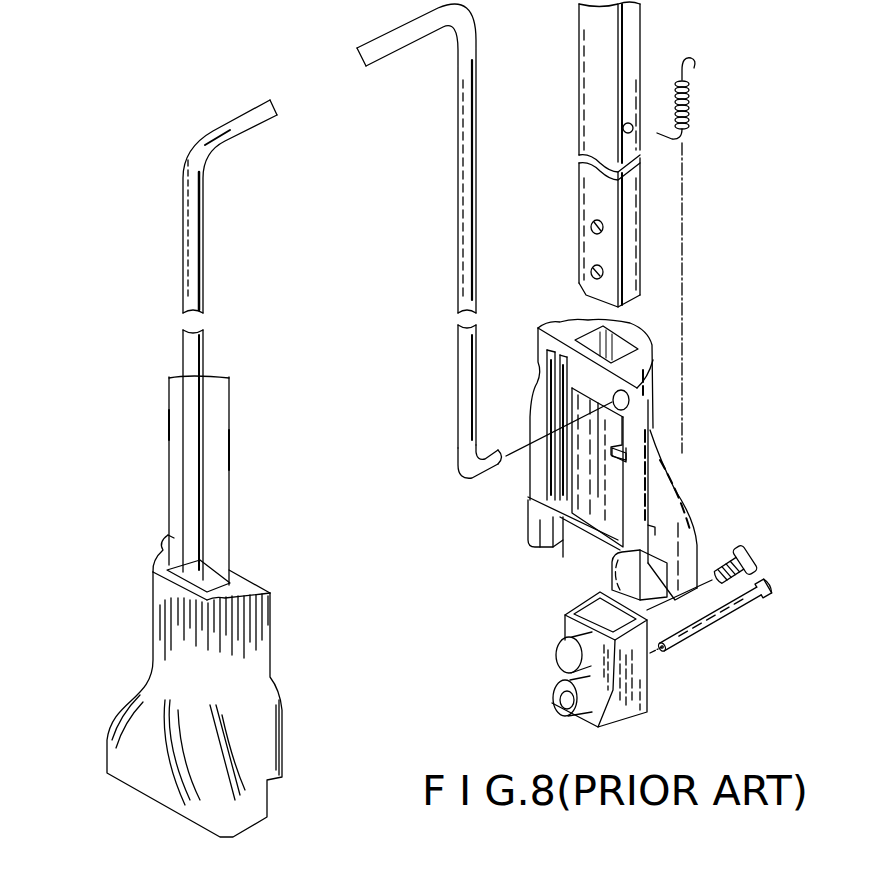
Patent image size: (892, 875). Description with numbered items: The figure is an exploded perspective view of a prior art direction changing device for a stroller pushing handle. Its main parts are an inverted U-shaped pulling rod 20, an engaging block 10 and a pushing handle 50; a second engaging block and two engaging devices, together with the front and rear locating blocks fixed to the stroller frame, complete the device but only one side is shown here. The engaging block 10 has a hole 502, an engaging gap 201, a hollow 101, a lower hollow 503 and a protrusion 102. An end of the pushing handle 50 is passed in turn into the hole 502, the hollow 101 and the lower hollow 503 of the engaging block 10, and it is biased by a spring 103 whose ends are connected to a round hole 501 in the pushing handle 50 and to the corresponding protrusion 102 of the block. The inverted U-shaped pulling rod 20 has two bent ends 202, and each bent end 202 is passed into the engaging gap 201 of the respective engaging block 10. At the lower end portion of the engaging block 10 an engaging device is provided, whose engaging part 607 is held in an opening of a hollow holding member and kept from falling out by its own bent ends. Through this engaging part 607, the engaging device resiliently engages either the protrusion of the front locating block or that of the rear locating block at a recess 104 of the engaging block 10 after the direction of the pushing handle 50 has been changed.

The engaging block 10 is at (248, 672).
The inverted U-shaped pulling rod 20 is at (204, 238).
The pushing handle 50 is at (600, 57).
The hollow 101 is at (612, 483).
The protrusion 102 is at (627, 462).
The spring 103 is at (692, 97).
The recess 104 is at (553, 550).
The engaging gap 201 is at (627, 406).
The bent end 202 is at (485, 467).
The round hole 501 is at (630, 134).
The hole 502 is at (610, 343).
The lower hollow 503 is at (652, 530).
The engaging part 607 is at (530, 530).